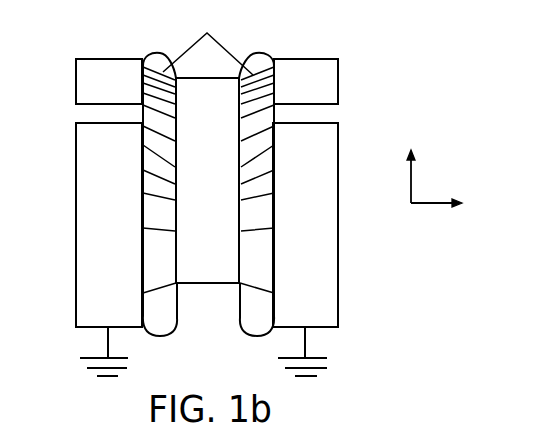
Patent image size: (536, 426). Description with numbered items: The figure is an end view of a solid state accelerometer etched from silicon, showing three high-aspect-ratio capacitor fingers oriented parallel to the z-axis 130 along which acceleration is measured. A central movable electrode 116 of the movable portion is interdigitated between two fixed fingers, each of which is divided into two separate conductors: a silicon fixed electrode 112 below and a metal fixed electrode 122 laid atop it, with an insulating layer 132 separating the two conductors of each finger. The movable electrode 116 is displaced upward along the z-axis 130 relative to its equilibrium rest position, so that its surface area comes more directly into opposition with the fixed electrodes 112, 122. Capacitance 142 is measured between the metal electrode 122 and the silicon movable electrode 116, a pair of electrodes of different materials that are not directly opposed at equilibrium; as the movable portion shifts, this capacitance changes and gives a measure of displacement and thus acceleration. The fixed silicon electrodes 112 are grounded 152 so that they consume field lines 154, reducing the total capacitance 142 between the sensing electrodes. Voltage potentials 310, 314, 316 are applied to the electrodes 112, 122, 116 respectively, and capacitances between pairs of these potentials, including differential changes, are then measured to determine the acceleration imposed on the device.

The fixed electrode 112 is at (124, 297).
The movable electrode 116 is at (222, 113).
The fixed metal electrode 122 is at (84, 66).
The z-axis 130 is at (412, 187).
The insulating layer 132 is at (92, 116).
The capacitance gap 142 is at (208, 44).
The ground 152 is at (126, 358).
The field lines 154 is at (247, 250).
The voltage potential 310 is at (124, 233).
The voltage potential 314 is at (125, 97).
The voltage potential 316 is at (220, 195).